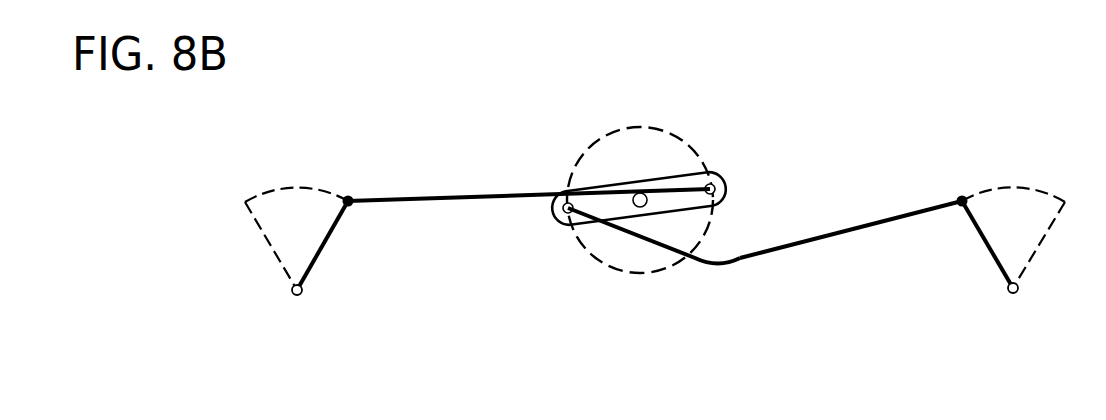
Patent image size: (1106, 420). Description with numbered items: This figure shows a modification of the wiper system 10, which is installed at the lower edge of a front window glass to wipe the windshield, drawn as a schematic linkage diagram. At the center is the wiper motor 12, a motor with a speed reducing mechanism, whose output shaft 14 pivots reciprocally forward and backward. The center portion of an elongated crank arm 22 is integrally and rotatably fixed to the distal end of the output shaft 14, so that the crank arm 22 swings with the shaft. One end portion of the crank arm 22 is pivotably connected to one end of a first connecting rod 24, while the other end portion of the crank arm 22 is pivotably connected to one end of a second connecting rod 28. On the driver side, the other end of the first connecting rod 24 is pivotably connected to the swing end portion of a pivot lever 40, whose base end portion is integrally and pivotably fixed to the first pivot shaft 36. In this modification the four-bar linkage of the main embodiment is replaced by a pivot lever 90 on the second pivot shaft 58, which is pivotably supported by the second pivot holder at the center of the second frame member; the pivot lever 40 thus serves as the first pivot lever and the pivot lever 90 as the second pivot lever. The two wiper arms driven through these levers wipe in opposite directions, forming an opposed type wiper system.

The wiper system 10 is at (596, 114).
The wiper motor 12 is at (657, 128).
The output shaft 14 is at (711, 212).
The crank arm 22 is at (581, 230).
The first connecting rod 24 is at (452, 195).
The second connecting rod 28 is at (873, 220).
The first pivot shaft 36 is at (297, 297).
The pivot lever 40 is at (323, 249).
The second pivot shaft 58 is at (1016, 296).
The pivot lever 90 is at (980, 243).